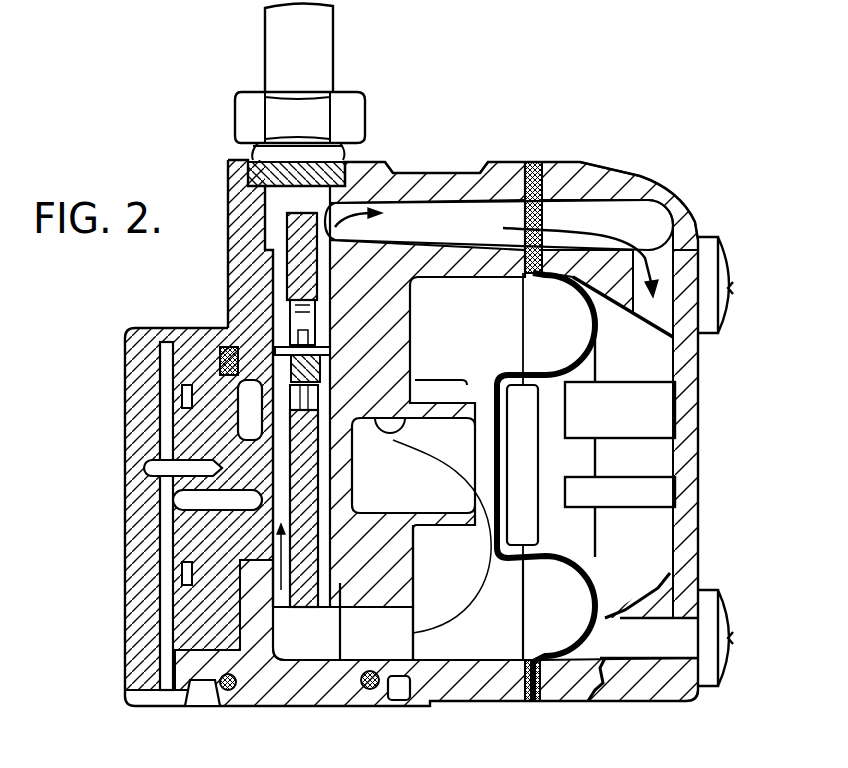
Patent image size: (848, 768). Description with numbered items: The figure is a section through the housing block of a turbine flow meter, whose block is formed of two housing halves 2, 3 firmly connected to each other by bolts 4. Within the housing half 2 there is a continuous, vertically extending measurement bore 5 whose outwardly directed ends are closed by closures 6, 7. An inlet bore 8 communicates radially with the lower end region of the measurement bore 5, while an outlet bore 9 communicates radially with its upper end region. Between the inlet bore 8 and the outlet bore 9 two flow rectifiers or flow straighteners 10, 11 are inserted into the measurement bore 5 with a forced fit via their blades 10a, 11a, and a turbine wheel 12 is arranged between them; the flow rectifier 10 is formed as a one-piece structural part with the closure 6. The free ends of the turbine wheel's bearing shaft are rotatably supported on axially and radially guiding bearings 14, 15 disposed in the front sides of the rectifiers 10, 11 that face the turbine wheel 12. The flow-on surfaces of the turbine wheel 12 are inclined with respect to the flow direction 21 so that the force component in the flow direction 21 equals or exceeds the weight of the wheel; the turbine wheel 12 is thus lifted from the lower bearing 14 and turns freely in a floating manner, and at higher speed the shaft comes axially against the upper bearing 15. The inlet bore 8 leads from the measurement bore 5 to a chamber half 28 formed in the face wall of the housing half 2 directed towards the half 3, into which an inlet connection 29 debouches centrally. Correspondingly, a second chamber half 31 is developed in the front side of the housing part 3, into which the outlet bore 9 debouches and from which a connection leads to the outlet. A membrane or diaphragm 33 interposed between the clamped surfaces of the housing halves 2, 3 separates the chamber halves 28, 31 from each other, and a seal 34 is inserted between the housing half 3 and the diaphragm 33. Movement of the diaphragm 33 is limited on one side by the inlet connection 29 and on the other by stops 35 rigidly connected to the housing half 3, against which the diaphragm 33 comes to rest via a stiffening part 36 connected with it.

The housing half 2 is at (402, 218).
The housing half 3 is at (603, 186).
The bolts 4 is at (703, 322).
The measurement bore 5 is at (287, 278).
The closure 6 is at (270, 703).
The closure 7 is at (236, 166).
The inlet bore 8 is at (382, 660).
The outlet bore 9 is at (440, 212).
The flow rectifier 10 is at (328, 625).
The blades 10a is at (270, 513).
The flow rectifier 11 is at (316, 212).
The blades 11a is at (285, 248).
The turbine wheel 12 is at (221, 362).
The bearing 14 is at (286, 398).
The bearing 15 is at (288, 318).
The flow direction 21 is at (262, 553).
The chamber half 28 is at (462, 628).
The inlet connection 29 is at (458, 540).
The second chamber half 31 is at (635, 548).
The membrane 33 is at (580, 665).
The seal 34 is at (533, 680).
The stops 35 is at (655, 412).
The stiffening part 36 is at (512, 372).